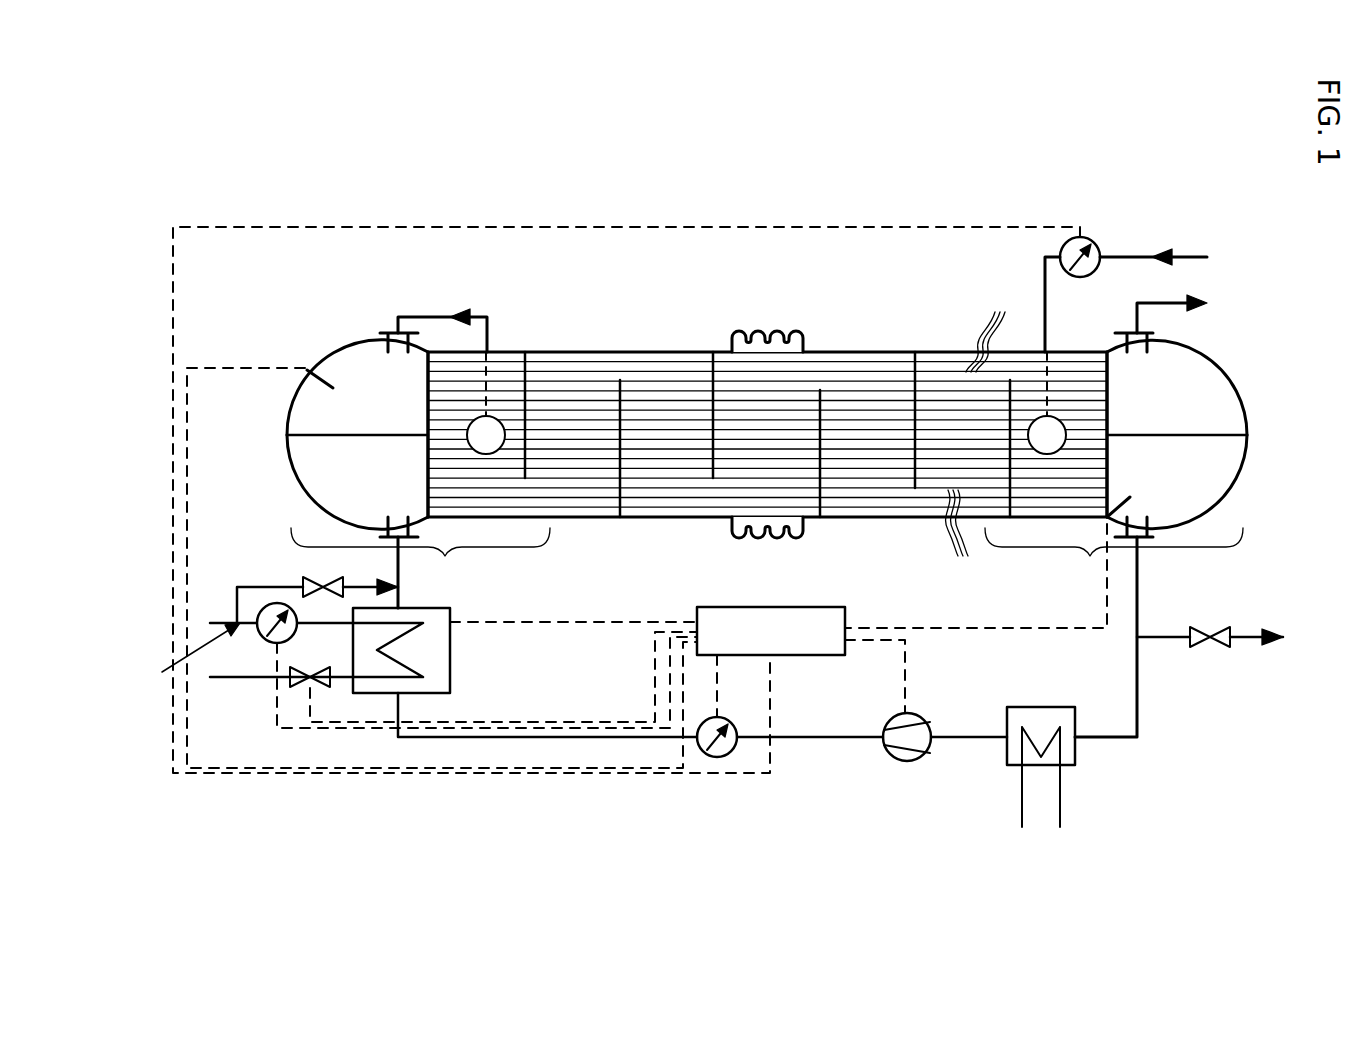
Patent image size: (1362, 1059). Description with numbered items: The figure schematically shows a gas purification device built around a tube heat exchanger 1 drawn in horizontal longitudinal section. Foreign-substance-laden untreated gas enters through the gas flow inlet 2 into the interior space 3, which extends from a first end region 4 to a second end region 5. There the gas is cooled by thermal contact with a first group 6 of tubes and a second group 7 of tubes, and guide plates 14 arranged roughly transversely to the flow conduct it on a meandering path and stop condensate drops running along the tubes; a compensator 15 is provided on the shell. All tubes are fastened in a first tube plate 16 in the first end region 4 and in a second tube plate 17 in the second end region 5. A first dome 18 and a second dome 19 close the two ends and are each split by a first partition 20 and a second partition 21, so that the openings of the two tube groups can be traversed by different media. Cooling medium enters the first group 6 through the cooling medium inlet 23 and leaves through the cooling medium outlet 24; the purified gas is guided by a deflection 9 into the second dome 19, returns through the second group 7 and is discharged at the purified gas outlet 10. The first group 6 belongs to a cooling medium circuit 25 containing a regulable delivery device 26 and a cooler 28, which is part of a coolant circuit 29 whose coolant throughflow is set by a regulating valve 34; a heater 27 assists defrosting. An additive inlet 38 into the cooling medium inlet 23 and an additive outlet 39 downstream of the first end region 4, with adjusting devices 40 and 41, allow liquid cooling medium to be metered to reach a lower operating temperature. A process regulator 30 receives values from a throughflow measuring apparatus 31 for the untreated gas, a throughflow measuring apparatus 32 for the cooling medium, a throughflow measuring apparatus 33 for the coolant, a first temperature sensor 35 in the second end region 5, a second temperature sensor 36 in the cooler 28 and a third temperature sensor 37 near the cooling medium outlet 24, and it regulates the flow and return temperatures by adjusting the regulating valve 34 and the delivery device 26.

The heat exchanger 1 is at (873, 345).
The gas flow inlet 2 is at (1192, 257).
The interior space 3 is at (652, 392).
The first end region 4 is at (1114, 563).
The second end region 5 is at (420, 563).
The first group of tubes 6 is at (957, 542).
The second group of tubes 7 is at (985, 324).
The deflection 9 is at (440, 317).
The purified gas outlet 10 is at (1185, 304).
The guide plates 14 is at (526, 392).
The compensator 15 is at (752, 330).
The first tube plate 16 is at (1110, 378).
The second tube plate 17 is at (426, 377).
The first dome 18 is at (1233, 382).
The second dome 19 is at (296, 488).
The first partition 20 is at (1234, 432).
The second partition 21 is at (284, 440).
The cooling medium inlet 23 is at (392, 528).
The cooling medium outlet 24 is at (1153, 531).
The cooling medium circuit 25 is at (1118, 680).
The delivery device 26 is at (907, 762).
The heater 27 is at (1076, 752).
The cooler 28 is at (450, 678).
The coolant circuit 29 is at (152, 686).
The process regulator 30 is at (850, 609).
The throughflow measuring apparatus for gas flow 31 is at (1094, 242).
The throughflow measuring apparatus for cooling medium 32 is at (717, 760).
The throughflow measuring apparatus for coolant 33 is at (262, 640).
The regulating valve for coolant 34 is at (303, 690).
The first temperature sensor 35 is at (312, 378).
The second temperature sensor 36 is at (437, 625).
The third temperature sensor 37 is at (1150, 508).
The additive inlet 38 is at (357, 585).
The additive outlet 39 is at (1172, 641).
The adjusting device for the additive inlet 40 is at (303, 578).
The adjusting device for the additive outlet 41 is at (1215, 648).